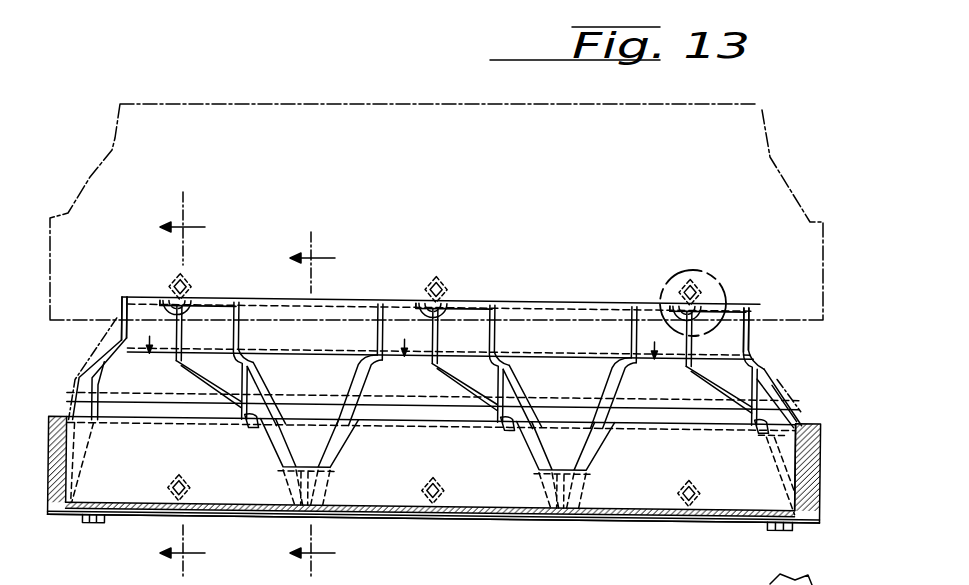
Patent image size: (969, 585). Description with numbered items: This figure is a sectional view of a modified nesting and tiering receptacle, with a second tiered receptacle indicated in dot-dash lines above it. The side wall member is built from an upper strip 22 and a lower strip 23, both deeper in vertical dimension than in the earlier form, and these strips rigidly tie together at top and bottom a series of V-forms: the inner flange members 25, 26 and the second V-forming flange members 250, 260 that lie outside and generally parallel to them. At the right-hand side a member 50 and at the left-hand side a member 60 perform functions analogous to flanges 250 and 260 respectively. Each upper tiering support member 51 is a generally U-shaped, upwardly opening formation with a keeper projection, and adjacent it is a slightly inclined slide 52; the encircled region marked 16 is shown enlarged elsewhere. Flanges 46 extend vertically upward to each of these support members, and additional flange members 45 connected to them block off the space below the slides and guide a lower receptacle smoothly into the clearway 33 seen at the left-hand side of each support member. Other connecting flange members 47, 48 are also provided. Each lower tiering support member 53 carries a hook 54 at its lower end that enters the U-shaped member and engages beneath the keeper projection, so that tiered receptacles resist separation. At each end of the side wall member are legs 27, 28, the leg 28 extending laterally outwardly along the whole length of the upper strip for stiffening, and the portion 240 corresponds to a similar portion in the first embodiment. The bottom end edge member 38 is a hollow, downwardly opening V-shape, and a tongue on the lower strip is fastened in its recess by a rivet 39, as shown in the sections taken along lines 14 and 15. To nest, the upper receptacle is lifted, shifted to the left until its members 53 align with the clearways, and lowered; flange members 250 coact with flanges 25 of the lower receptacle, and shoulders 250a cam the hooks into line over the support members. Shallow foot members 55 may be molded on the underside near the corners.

The section line 14- 14 is at (162, 385).
The section line 15- 15 is at (292, 405).
The detail reference (see FIG. 16) 16 is at (713, 273).
The side wall member upper strip 22 is at (528, 308).
The side wall member lower strip 23 is at (434, 469).
The V-forming flange member 25 is at (286, 406).
The V-forming flange member 26 is at (340, 381).
The leg 27 is at (115, 334).
The leg or flange 28 is at (90, 370).
The clearway 33 is at (404, 339).
The bottom end edge member 38 is at (55, 416).
The rivet 39 is at (822, 464).
The additional flange member 45 is at (220, 379).
The flange 46 is at (184, 337).
The connecting flange member 47 is at (249, 378).
The connecting flange member 48 is at (384, 362).
The flange member 50 is at (766, 446).
The upper tiering support member 51 is at (165, 300).
The slide 52 is at (203, 301).
The lower tiering support member 53 is at (191, 281).
The hook 54 is at (447, 516).
The shallow foot member 55 is at (92, 524).
The flange member 60 is at (113, 405).
The portion 240 is at (110, 378).
The second V-forming flange member 250 is at (270, 457).
The shoulder 250a is at (252, 420).
The second V-forming flange member 260 is at (360, 441).